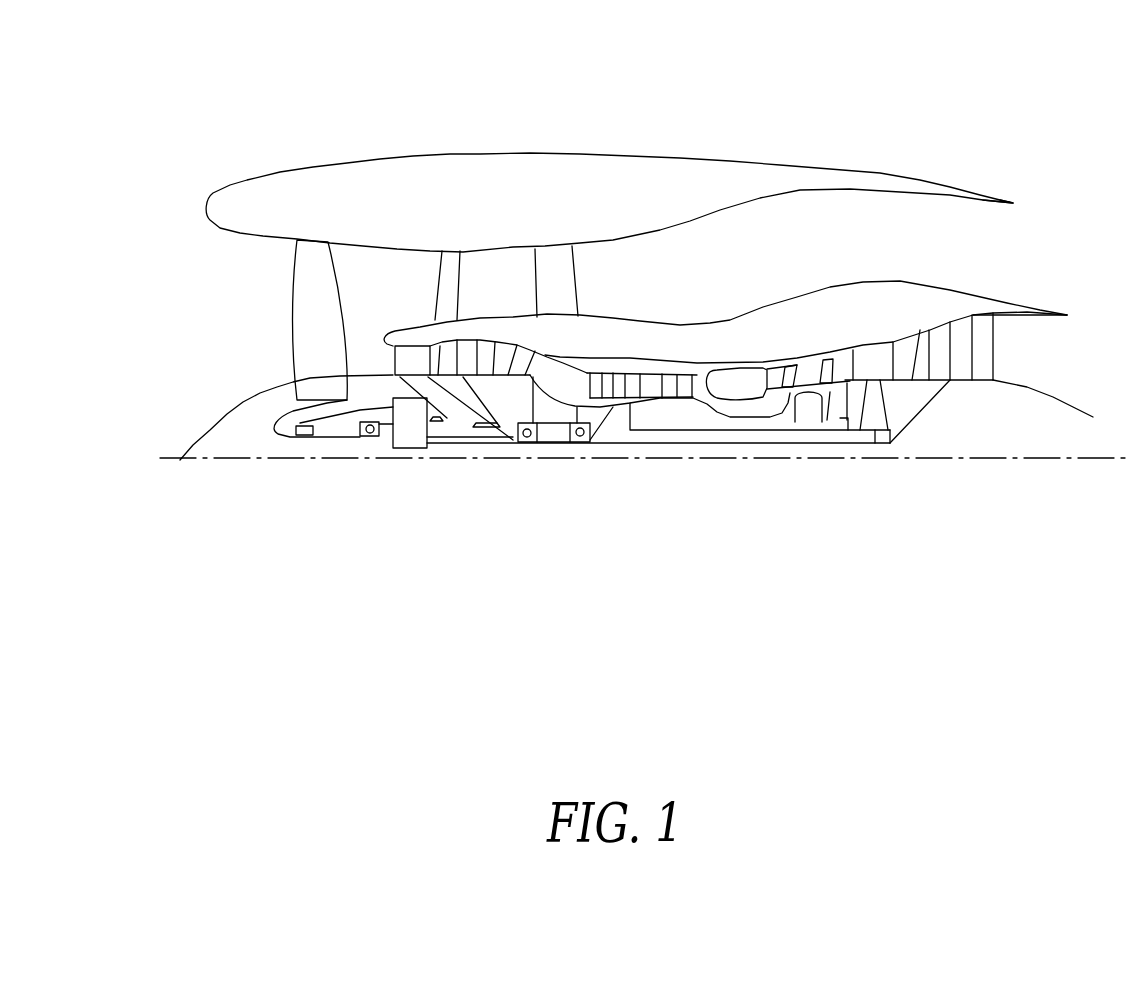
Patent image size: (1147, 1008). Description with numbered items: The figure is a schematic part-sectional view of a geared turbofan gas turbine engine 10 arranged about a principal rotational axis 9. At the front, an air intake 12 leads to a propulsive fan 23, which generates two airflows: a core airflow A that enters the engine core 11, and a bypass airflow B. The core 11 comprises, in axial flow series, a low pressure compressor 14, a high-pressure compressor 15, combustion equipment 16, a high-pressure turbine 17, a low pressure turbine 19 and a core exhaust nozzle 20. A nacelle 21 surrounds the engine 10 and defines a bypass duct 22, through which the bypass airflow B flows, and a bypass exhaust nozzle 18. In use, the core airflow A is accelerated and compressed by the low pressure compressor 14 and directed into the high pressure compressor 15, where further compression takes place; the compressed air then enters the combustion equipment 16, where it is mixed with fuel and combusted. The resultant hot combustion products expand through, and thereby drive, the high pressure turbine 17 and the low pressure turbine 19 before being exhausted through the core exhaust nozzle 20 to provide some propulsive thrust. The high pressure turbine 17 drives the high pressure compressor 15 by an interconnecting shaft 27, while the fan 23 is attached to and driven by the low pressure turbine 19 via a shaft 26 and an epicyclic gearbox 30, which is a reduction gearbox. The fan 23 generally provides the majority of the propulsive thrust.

The principal rotational axis 9 is at (1012, 463).
The gas turbine engine 10 is at (602, 167).
The core 11 is at (705, 351).
The air intake 12 is at (373, 348).
The low pressure compressor 14 is at (487, 350).
The high-pressure compressor 15 is at (645, 383).
The combustion equipment 16 is at (737, 388).
The high-pressure turbine 17 is at (805, 365).
The bypass exhaust nozzle 18 is at (930, 233).
The low pressure turbine 19 is at (961, 367).
The core exhaust nozzle 20 is at (1023, 350).
The nacelle 21 is at (507, 177).
The bypass duct 22 is at (853, 227).
The propulsive fan 23 is at (297, 322).
The shaft 26 is at (643, 447).
The interconnecting shaft 27 is at (764, 427).
The epicyclic gearbox 30 is at (405, 447).